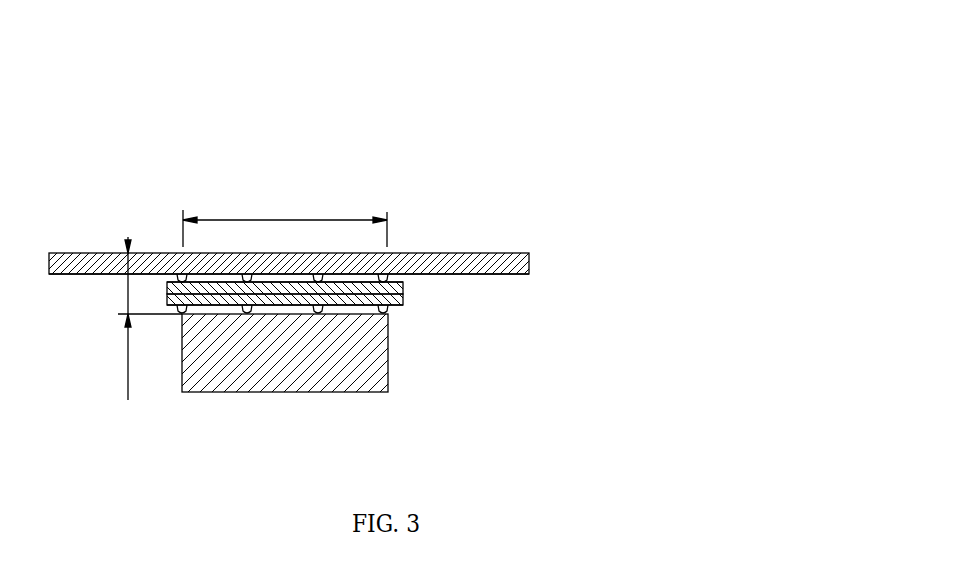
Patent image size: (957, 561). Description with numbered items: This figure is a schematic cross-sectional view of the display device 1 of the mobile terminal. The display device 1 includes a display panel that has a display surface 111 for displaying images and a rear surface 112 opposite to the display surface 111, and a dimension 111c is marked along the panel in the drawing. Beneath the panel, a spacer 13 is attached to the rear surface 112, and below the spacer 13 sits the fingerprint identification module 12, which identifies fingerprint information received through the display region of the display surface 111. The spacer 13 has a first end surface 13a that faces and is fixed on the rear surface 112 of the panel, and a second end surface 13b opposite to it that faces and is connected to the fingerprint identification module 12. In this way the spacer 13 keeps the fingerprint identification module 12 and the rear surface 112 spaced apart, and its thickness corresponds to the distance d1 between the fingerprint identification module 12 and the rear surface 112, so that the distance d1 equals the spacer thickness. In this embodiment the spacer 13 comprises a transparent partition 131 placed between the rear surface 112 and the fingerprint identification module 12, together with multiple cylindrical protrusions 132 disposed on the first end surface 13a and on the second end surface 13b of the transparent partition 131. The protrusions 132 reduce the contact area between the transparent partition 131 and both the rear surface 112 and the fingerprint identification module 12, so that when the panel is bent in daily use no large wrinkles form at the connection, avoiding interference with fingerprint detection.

The display device 1 is at (520, 91).
The display surface 111 is at (507, 253).
The rear surface 112 is at (507, 274).
The width of plate opening region 111c is at (285, 210).
The spacer 13 is at (392, 344).
The transparent partition 131 is at (401, 295).
The protrusions 132 is at (388, 308).
The first end surface 13a is at (177, 283).
The second end surface 13b is at (210, 306).
The fingerprint identification module 12 is at (365, 383).
The distance d1 is at (134, 318).